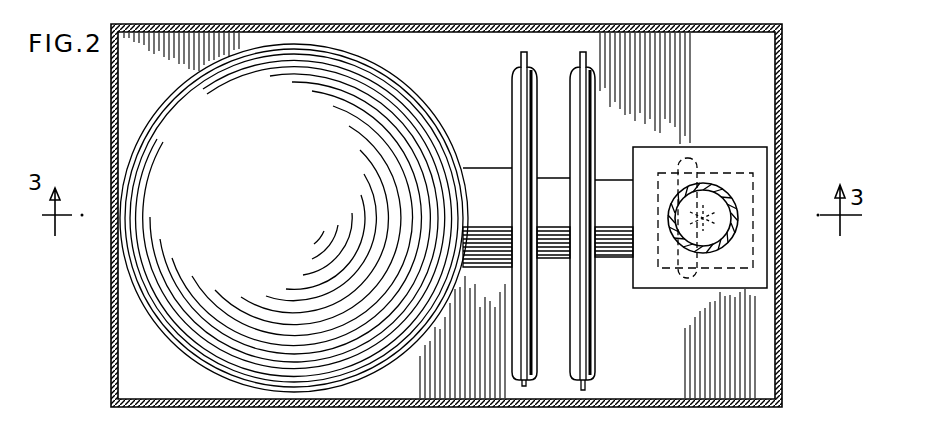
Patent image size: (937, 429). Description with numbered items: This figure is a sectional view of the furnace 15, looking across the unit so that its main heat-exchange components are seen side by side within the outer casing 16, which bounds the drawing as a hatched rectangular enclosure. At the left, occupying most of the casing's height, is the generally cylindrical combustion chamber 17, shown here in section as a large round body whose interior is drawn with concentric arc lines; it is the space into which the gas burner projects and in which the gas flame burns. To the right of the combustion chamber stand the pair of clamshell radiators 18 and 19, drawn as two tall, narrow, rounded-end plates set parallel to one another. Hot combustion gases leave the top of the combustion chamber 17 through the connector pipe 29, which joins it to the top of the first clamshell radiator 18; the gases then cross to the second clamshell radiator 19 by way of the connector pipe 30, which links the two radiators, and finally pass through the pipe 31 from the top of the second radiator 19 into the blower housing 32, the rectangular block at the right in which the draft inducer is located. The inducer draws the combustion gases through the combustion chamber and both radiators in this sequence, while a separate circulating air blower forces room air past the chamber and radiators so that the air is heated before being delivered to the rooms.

The furnace 15 is at (784, 363).
The outer casing 16 is at (110, 321).
The combustion chamber 17 is at (150, 117).
The first clamshell radiator 18 is at (517, 112).
The second clamshell radiator 19 is at (596, 100).
The connector pipe 29 is at (481, 274).
The connector pipe 30 is at (553, 256).
The pipe 31 is at (612, 260).
The blower housing 32 is at (708, 146).